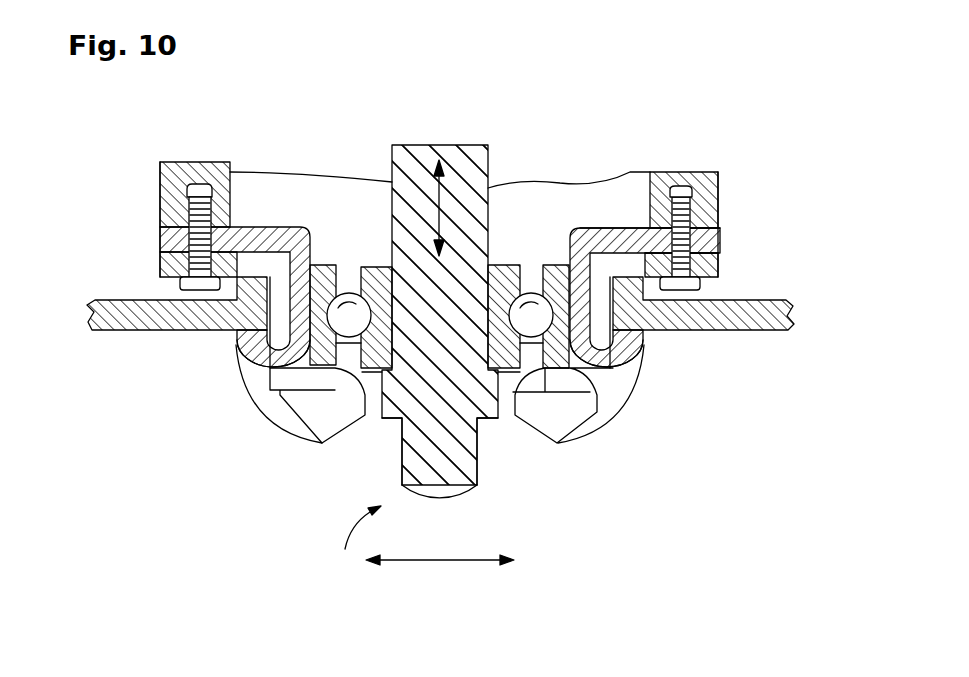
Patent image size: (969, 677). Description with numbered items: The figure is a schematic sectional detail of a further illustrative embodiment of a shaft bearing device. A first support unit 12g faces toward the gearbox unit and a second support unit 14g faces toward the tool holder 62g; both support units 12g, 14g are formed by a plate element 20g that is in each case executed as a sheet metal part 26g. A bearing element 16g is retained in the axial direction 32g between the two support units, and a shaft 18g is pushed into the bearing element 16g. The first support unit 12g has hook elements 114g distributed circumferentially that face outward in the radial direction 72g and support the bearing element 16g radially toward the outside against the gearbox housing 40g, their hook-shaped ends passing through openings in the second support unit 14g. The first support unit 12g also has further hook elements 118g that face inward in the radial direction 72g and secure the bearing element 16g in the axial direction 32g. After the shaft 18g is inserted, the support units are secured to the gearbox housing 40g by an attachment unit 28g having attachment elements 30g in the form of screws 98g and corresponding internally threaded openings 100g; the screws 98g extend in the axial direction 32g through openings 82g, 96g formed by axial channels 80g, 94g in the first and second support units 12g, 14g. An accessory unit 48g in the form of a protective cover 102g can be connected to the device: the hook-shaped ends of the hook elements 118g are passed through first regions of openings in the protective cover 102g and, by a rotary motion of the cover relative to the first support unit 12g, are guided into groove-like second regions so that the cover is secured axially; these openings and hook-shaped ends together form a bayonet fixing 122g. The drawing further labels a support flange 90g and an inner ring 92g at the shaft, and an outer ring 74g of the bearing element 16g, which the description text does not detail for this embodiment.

The first support unit 12g is at (720, 240).
The second support unit 14g is at (637, 335).
The bearing element 16g is at (530, 350).
The shaft 18g is at (462, 165).
The plate element 20g is at (580, 240).
The sheet metal part 26g is at (636, 236).
The attachment unit 28g is at (701, 178).
The attachment elements 30g is at (197, 184).
The axial direction 32g is at (438, 207).
The gearbox housing 40g is at (678, 186).
The accessory unit 48g is at (769, 335).
The tool holder 62g is at (340, 531).
The radial direction 72g is at (438, 567).
The spring element 74g is at (620, 393).
The axial channel 80g is at (712, 238).
The opening 82g is at (714, 262).
The shaft shoulder 90g is at (388, 417).
The bearing inner ring 92g is at (503, 265).
The axial channel 94g is at (163, 240).
The opening 96g is at (160, 274).
The screws 98g is at (188, 210).
The openings 100g is at (160, 168).
The protective cover 102g is at (118, 318).
The hook elements 114g is at (640, 333).
The hook elements 118g is at (340, 266).
The bayonet fixing 122g is at (236, 331).